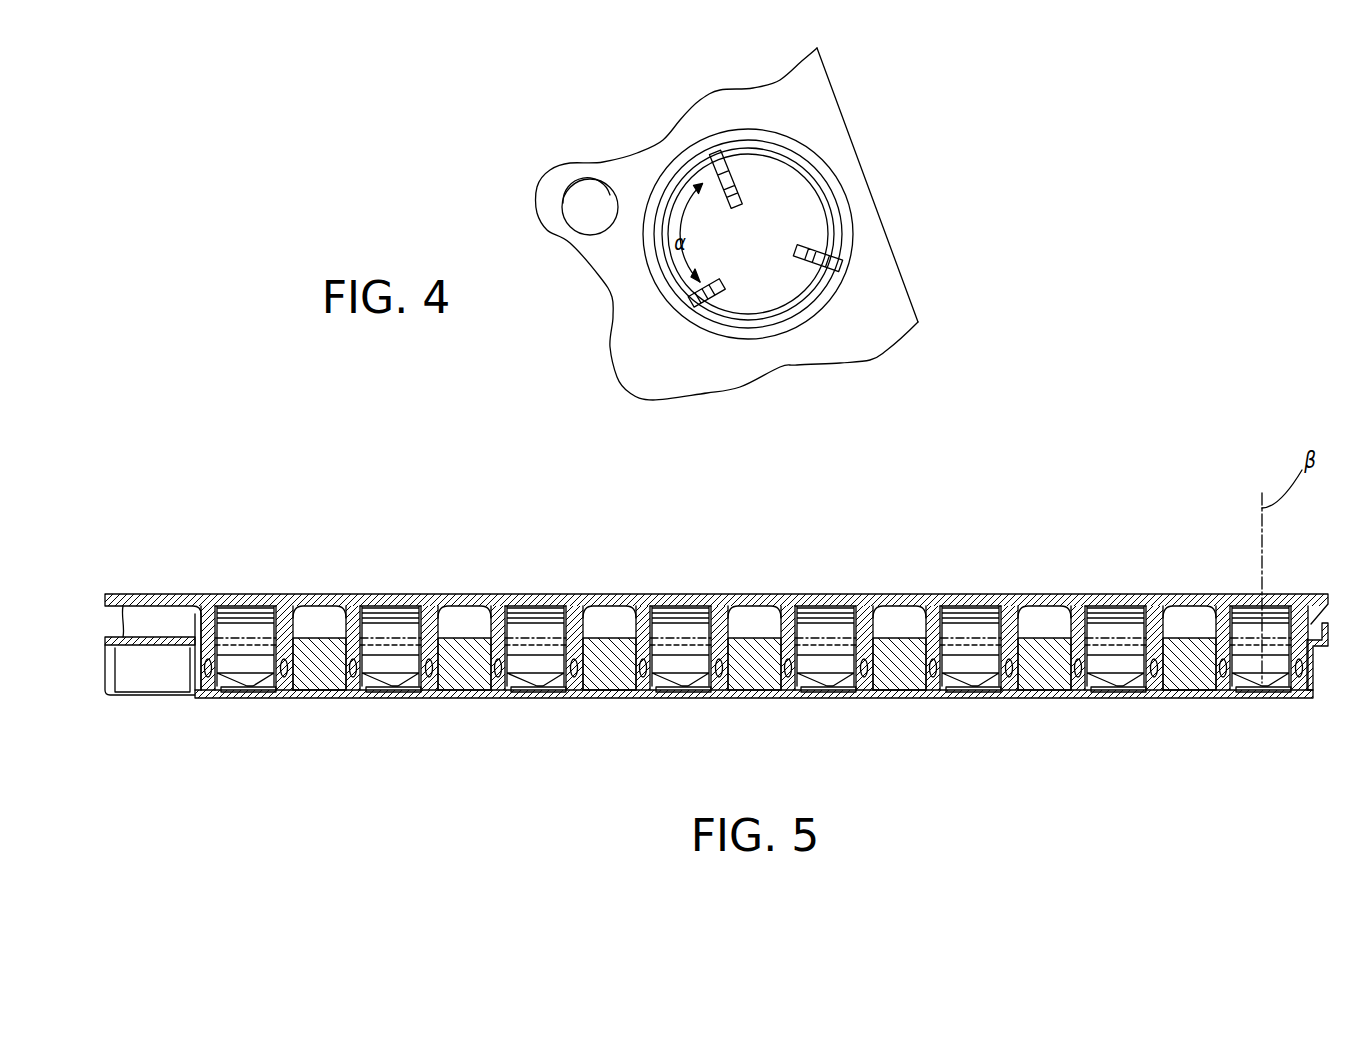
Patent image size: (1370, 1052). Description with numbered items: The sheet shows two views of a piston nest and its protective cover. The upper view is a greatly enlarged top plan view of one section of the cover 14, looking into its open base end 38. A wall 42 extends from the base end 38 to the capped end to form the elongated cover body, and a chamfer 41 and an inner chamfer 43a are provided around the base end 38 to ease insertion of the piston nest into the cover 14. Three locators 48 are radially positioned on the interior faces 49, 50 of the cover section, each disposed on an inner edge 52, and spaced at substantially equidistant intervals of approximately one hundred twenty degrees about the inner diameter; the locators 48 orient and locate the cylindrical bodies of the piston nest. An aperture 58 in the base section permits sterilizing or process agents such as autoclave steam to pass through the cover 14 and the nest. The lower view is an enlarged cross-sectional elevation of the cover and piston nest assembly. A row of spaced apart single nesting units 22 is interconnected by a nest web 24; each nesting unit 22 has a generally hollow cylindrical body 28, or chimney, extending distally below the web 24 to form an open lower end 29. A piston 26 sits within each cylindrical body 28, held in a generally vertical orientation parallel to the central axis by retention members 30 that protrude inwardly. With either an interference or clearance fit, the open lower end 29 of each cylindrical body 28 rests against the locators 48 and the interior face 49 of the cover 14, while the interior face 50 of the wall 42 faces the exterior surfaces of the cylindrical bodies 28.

In FIG. 5, the cover 14 is at (107, 647).
In FIG. 5, the single nesting unit 22 is at (754, 635).
In FIG. 5, the nest web 24 is at (152, 592).
In FIG. 5, the piston 26 is at (238, 663).
In FIG. 5, the cylindrical body 28 is at (195, 625).
In FIG. 5, the open lower end 29 is at (273, 693).
In FIG. 5, the retention member 30 is at (279, 593).
In FIG. 4, the base end 38 is at (853, 207).
In FIG. 4, the chamfer 41 is at (845, 252).
In FIG. 4, the wall 42 is at (668, 192).
In FIG. 5, the wall 42 is at (192, 670).
In FIG. 4, the inner chamfer 43a is at (686, 186).
In FIG. 4, the locator 48 is at (723, 167).
In FIG. 4, the interior face 49 is at (765, 258).
In FIG. 4, the interior face 50 is at (745, 157).
In FIG. 4, the inner edge 52 is at (667, 275).
In FIG. 4, the aperture 58 is at (580, 205).